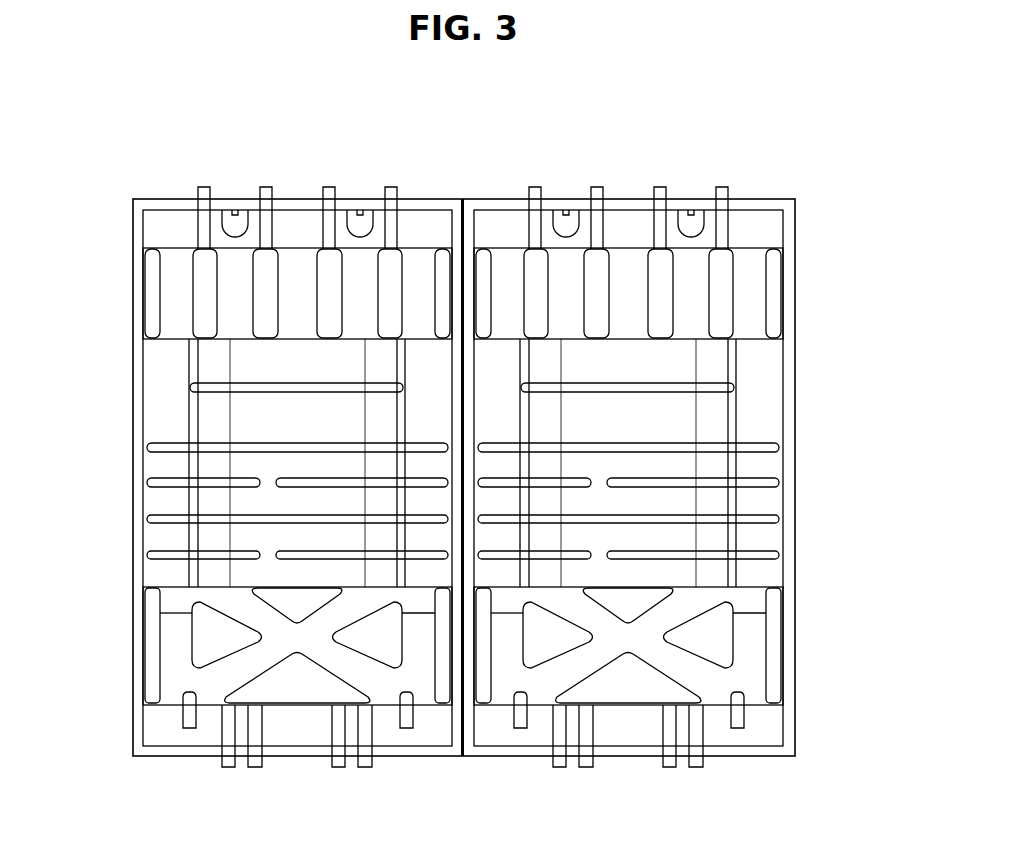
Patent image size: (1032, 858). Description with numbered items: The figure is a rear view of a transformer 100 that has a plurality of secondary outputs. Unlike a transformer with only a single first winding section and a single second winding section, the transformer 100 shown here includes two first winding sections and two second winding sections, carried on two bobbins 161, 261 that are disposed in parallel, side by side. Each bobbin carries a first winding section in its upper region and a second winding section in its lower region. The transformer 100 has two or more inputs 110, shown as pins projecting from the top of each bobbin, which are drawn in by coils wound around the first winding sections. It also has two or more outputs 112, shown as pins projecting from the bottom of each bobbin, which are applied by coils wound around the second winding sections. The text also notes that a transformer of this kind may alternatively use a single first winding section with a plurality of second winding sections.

The transformer 100 is at (743, 149).
The inputs 110 is at (203, 187).
The outputs 112 is at (230, 768).
The bobbin 161 is at (258, 418).
The bobbin 261 is at (668, 418).